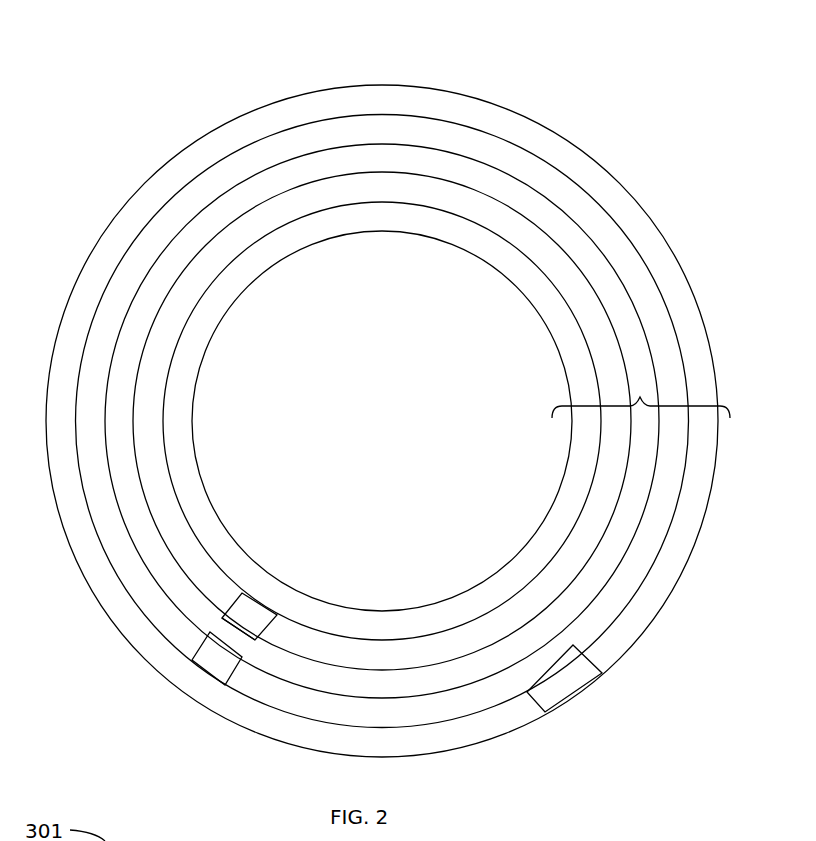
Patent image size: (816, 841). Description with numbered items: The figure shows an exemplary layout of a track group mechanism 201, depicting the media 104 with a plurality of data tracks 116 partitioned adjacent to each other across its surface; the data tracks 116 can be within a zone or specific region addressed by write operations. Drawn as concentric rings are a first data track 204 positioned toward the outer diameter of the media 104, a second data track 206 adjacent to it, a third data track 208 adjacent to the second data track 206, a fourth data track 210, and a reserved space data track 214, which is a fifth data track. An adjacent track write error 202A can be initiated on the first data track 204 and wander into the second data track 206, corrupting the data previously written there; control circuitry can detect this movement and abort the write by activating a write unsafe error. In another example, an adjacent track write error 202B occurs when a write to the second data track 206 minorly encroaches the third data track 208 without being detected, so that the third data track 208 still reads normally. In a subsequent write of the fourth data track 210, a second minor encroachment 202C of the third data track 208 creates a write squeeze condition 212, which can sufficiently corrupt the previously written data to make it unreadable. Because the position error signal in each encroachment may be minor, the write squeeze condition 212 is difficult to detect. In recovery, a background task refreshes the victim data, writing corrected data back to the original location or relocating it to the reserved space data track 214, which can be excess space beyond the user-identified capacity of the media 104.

The track group mechanism 201 is at (158, 68).
The media 104 is at (555, 135).
The data tracks 116 is at (640, 400).
The first data track 204 is at (136, 637).
The second data track 206 is at (130, 594).
The third data track 208 is at (124, 520).
The fourth data track 210 is at (190, 537).
The reserved space data track 214 is at (230, 553).
The write squeeze condition 212 is at (270, 646).
The adjacent track write error 202A is at (578, 670).
The adjacent track write error 202B is at (235, 657).
The second minor encroachment 202C is at (234, 620).